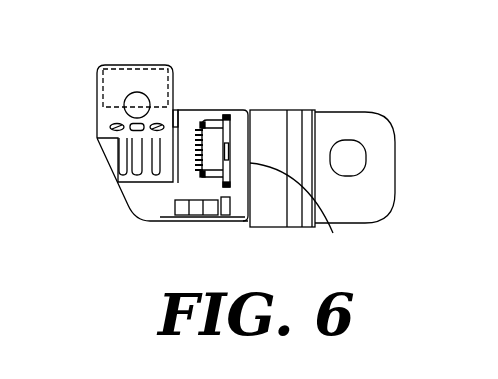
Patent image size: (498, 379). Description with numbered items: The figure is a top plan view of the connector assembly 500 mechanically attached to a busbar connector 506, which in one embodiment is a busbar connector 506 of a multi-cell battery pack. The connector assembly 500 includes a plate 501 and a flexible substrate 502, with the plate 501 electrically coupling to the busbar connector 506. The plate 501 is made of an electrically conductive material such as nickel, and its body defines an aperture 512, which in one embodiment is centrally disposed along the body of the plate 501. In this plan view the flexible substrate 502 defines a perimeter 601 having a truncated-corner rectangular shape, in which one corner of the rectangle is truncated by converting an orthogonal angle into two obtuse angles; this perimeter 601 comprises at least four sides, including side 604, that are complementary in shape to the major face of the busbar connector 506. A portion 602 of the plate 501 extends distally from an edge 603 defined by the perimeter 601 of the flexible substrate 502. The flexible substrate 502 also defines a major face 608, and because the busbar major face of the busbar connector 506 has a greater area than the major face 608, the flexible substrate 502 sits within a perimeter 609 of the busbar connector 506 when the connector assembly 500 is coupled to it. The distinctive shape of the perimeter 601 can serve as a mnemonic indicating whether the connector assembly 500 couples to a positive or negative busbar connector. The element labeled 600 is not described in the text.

The connector assembly 500 is at (90, 166).
The plate 501 is at (120, 63).
The flexible substrate 502 is at (153, 215).
The busbar connector 506 is at (355, 118).
The aperture 512 is at (125, 100).
The terminal block 600 is at (298, 181).
The perimeter 601 is at (232, 222).
The portion 602 is at (138, 67).
The edge 603 is at (235, 110).
The side 604 is at (172, 222).
The major face 608 is at (162, 211).
The perimeter 609 is at (353, 223).